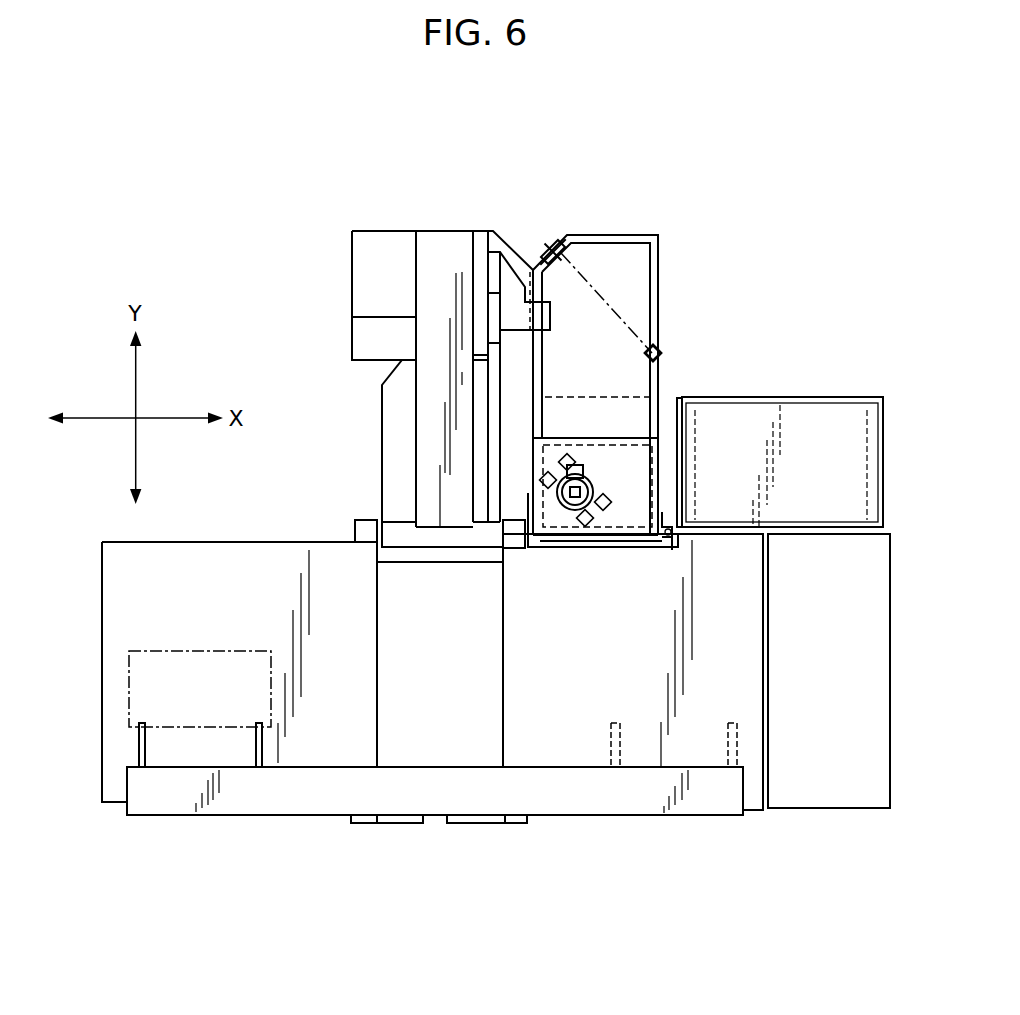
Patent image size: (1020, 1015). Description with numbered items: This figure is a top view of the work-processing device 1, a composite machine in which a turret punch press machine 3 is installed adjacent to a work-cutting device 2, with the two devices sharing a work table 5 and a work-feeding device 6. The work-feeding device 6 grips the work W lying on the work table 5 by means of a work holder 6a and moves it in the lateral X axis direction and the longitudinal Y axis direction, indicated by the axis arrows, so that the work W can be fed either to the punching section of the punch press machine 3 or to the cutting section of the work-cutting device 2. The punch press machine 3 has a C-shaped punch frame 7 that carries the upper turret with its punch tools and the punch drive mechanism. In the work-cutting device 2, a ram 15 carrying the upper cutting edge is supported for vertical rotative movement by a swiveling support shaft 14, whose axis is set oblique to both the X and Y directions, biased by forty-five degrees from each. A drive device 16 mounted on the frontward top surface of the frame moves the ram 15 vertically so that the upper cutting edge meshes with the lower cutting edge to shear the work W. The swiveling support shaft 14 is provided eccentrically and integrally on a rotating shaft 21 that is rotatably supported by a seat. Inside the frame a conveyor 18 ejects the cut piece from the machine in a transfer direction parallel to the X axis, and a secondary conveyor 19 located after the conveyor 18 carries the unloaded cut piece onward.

The work-processing device 1 is at (292, 338).
The work-cutting device 2 is at (670, 272).
The turret punch press machine 3 is at (438, 222).
The work table 5 is at (572, 730).
The work-feeding device 6 is at (310, 788).
The work holder 6a is at (260, 747).
The C-shaped punch frame 7 is at (432, 447).
The swiveling support shaft 14 is at (610, 303).
The ram 15 is at (607, 375).
The drive device 16 is at (592, 477).
The conveyor 18 is at (665, 403).
The secondary conveyor 19 is at (830, 415).
The rotating shaft 21 is at (548, 243).
The work W is at (210, 650).